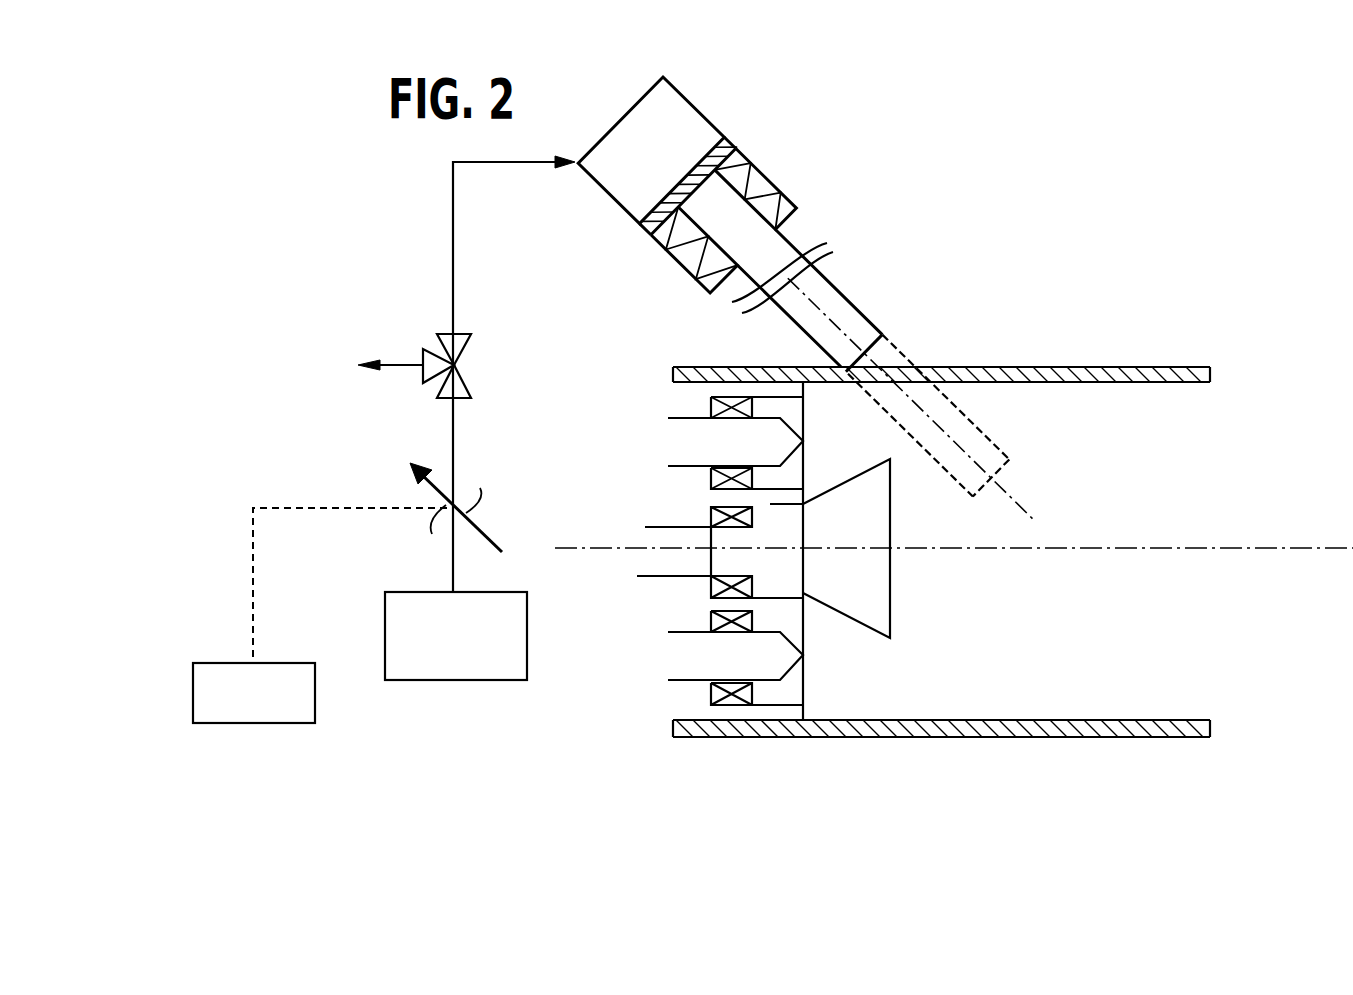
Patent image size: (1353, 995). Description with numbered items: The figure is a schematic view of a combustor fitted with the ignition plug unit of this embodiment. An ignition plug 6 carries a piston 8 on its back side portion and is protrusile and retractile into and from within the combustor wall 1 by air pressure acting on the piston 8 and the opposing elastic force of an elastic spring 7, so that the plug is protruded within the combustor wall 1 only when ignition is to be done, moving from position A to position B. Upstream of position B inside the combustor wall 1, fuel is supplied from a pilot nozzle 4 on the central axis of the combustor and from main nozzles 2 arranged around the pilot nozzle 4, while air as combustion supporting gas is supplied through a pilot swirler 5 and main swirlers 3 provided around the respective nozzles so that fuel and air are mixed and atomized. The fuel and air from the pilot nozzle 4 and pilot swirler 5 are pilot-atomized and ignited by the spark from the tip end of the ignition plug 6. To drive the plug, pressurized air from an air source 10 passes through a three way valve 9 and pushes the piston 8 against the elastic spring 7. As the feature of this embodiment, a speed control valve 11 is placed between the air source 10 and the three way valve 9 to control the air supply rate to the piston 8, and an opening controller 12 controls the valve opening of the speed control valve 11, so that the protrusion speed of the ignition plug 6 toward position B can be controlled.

The combustor wall 1 is at (1158, 367).
The main nozzles 2 is at (696, 682).
The main swirlers 3 is at (752, 692).
The pilot nozzle 4 is at (645, 527).
The pilot swirler 5 is at (711, 587).
The ignition plug 6 is at (827, 272).
The elastic spring 7 is at (763, 190).
The piston 8 is at (650, 204).
The three way valve 9 is at (438, 342).
The air source 10 is at (385, 612).
The speed control valve 11 is at (447, 507).
The opening controller 12 is at (252, 725).
The retracted position A is at (870, 353).
The protruded position B is at (1000, 477).